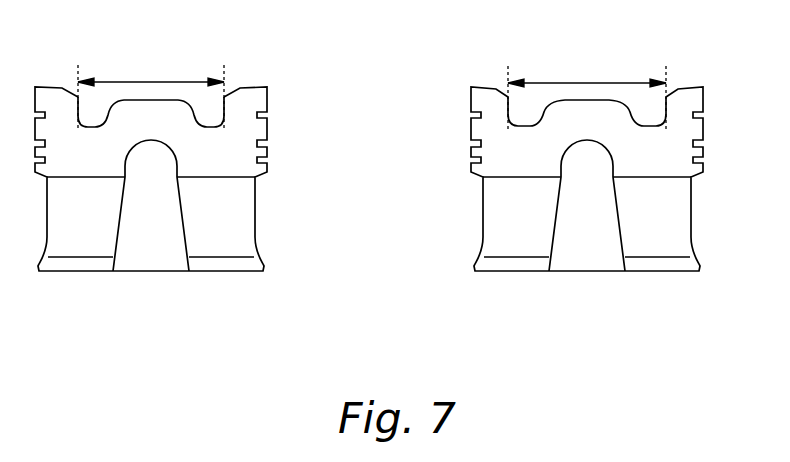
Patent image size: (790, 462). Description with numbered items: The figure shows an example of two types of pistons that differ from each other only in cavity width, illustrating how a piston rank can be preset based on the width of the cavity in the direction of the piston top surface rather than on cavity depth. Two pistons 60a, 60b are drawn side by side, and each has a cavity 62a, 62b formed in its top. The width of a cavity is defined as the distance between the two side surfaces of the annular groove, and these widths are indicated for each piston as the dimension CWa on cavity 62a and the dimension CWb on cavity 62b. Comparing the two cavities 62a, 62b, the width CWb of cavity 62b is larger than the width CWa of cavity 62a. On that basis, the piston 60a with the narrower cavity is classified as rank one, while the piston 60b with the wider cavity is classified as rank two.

The piston 60a is at (167, 196).
The piston 60b is at (592, 192).
The cavity 62a is at (120, 100).
The cavity 62b is at (568, 100).
The width of the cavity CWa is at (168, 82).
The width of the cavity CWb is at (598, 83).